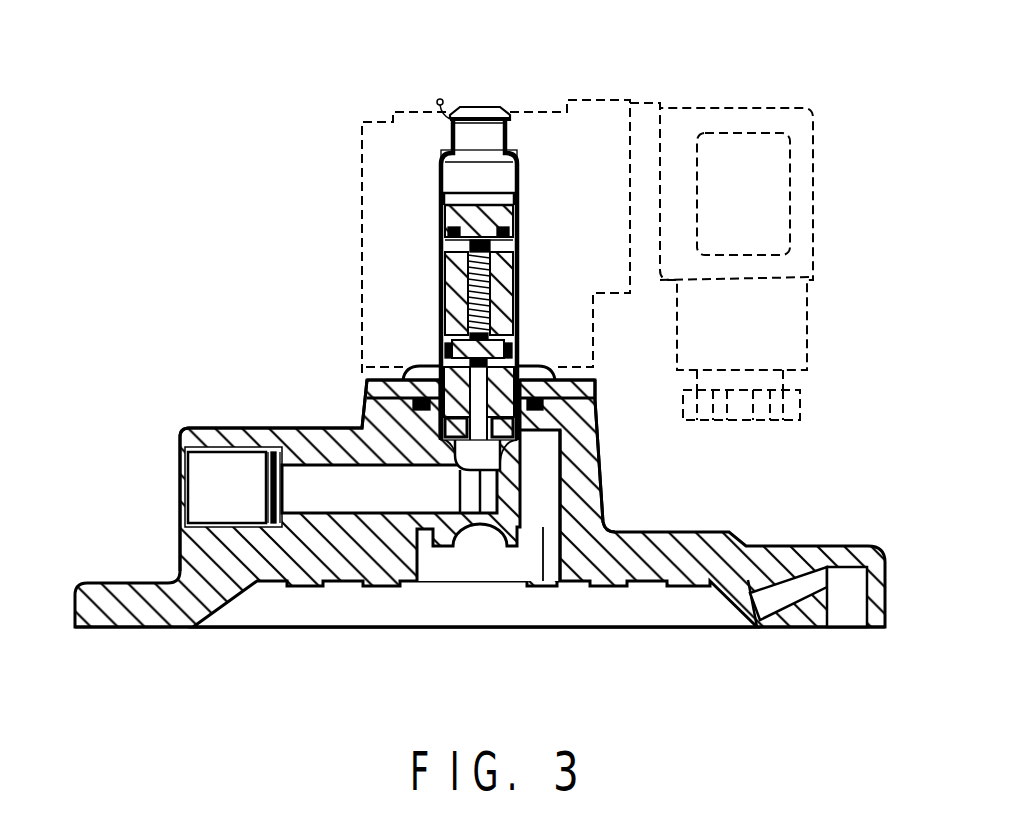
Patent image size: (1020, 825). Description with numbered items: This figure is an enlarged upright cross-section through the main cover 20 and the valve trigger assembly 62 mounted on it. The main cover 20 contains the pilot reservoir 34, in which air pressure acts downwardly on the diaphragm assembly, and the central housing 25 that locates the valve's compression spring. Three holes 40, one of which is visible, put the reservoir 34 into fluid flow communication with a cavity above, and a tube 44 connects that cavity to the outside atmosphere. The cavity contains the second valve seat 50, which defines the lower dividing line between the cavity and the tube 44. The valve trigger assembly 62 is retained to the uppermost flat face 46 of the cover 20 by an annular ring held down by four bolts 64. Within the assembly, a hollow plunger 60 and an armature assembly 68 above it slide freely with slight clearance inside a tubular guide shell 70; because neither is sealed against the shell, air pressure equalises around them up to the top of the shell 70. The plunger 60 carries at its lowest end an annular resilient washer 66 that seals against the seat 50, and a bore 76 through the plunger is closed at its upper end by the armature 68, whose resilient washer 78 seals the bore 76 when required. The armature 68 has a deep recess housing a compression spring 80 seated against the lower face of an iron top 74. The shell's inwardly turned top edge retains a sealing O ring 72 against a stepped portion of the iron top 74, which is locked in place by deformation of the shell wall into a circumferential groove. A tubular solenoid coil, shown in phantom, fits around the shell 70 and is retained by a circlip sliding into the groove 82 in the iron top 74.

The main cover 20 is at (668, 532).
The central housing 25 is at (487, 562).
The pilot reservoir 34 is at (340, 606).
The holes 40 is at (598, 478).
The tube 44 is at (208, 480).
The uppermost flat face 46 is at (360, 395).
The second valve seat 50 is at (462, 470).
The hollow plunger 60 is at (533, 367).
The valve trigger assembly 62 is at (260, 395).
The bolts 64 is at (420, 366).
The resilient washer 66 is at (403, 468).
The armature assembly 68 is at (519, 252).
The tubular guide shell 70 is at (440, 234).
The sealing O ring 72 is at (519, 172).
The iron top 74 is at (500, 107).
The bore 76 is at (441, 336).
The resilient washer 78 is at (440, 322).
The compression spring 80 is at (440, 282).
The groove 82 is at (448, 113).